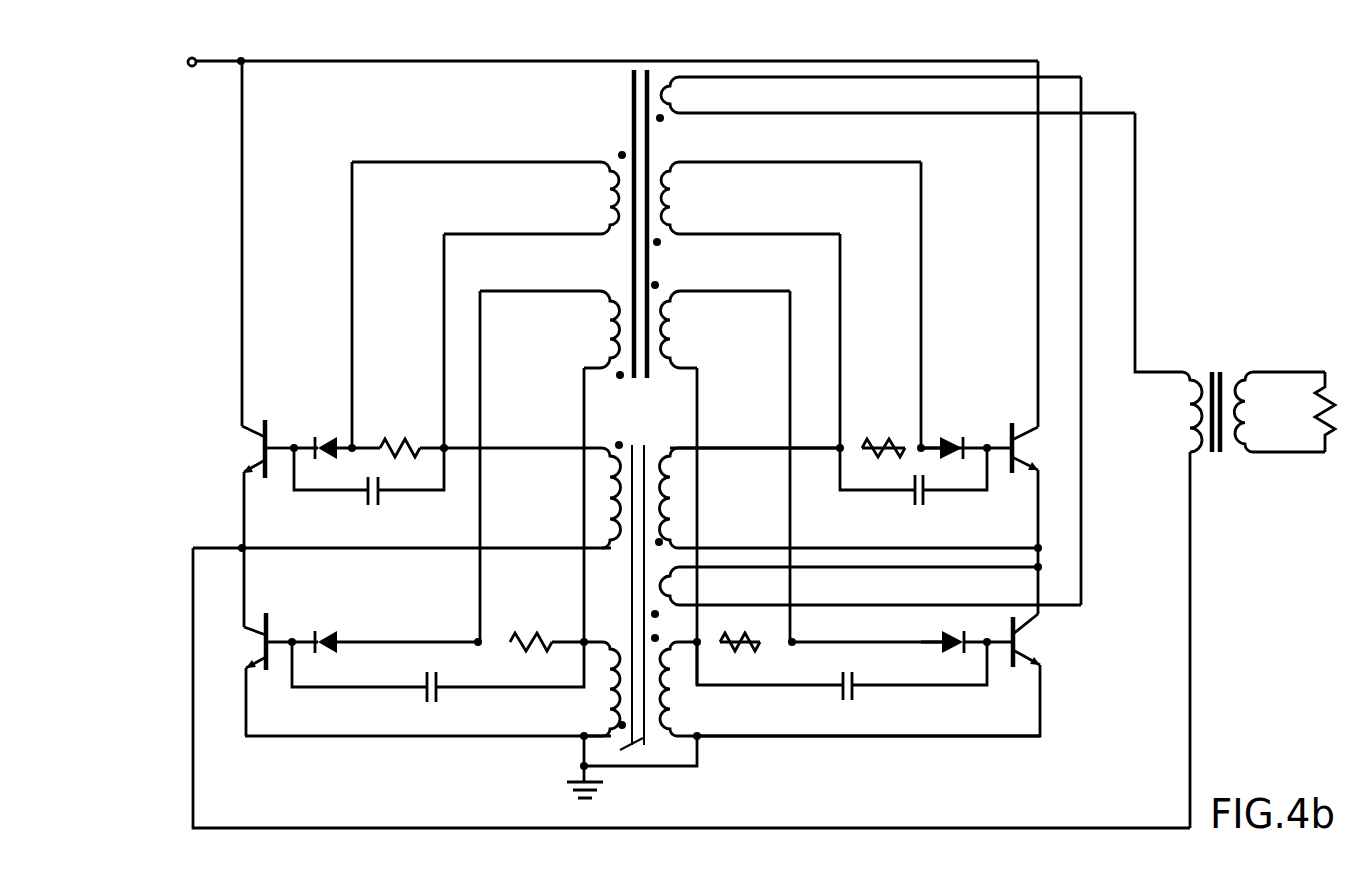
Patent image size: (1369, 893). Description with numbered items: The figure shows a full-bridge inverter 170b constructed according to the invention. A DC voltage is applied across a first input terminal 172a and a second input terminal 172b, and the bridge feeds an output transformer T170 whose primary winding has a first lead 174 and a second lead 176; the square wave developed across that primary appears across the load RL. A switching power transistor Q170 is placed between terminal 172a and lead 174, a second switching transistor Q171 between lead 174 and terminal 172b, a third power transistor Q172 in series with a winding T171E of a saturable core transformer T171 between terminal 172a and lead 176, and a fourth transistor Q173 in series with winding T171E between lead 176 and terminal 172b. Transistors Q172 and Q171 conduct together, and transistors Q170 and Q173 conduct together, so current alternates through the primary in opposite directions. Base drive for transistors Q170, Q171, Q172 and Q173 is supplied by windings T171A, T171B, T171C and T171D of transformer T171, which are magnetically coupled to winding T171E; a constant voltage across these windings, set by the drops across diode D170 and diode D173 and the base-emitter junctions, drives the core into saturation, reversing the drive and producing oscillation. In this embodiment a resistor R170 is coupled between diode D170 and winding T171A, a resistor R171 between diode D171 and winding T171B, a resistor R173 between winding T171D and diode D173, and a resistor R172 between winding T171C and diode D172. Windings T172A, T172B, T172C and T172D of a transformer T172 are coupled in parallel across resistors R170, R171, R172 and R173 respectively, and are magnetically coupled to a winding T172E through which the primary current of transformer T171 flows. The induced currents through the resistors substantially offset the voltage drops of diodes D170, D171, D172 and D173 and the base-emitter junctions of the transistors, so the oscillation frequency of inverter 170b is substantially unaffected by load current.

The full-bridge inverter 170b is at (1164, 105).
The first input terminal 172a is at (226, 63).
The second input terminal 172b is at (306, 737).
The first lead 174 is at (1162, 371).
The second lead 176 is at (1190, 495).
The output transformer T170 is at (1222, 371).
The load RL is at (1330, 393).
The transformer T172 is at (645, 278).
The winding T172A is at (674, 202).
The winding T172B is at (673, 347).
The winding T172C is at (612, 194).
The winding T172D is at (611, 338).
The winding T172E is at (666, 116).
The saturable core transformer T171 is at (655, 436).
The winding T171A is at (673, 502).
The winding T171B is at (673, 713).
The winding T171C is at (611, 495).
The winding T171D is at (612, 708).
The winding T171E is at (673, 592).
The switching power transistor Q170 is at (1020, 436).
The second switching transistor Q171 is at (1025, 630).
The third power transistor Q172 is at (262, 440).
The fourth transistor Q173 is at (262, 637).
The diode D170 is at (953, 436).
The diode D171 is at (945, 638).
The diode D172 is at (322, 436).
The diode D173 is at (331, 632).
The resistor R170 is at (890, 441).
The resistor R171 is at (745, 641).
The resistor R172 is at (396, 440).
The resistor R173 is at (532, 640).